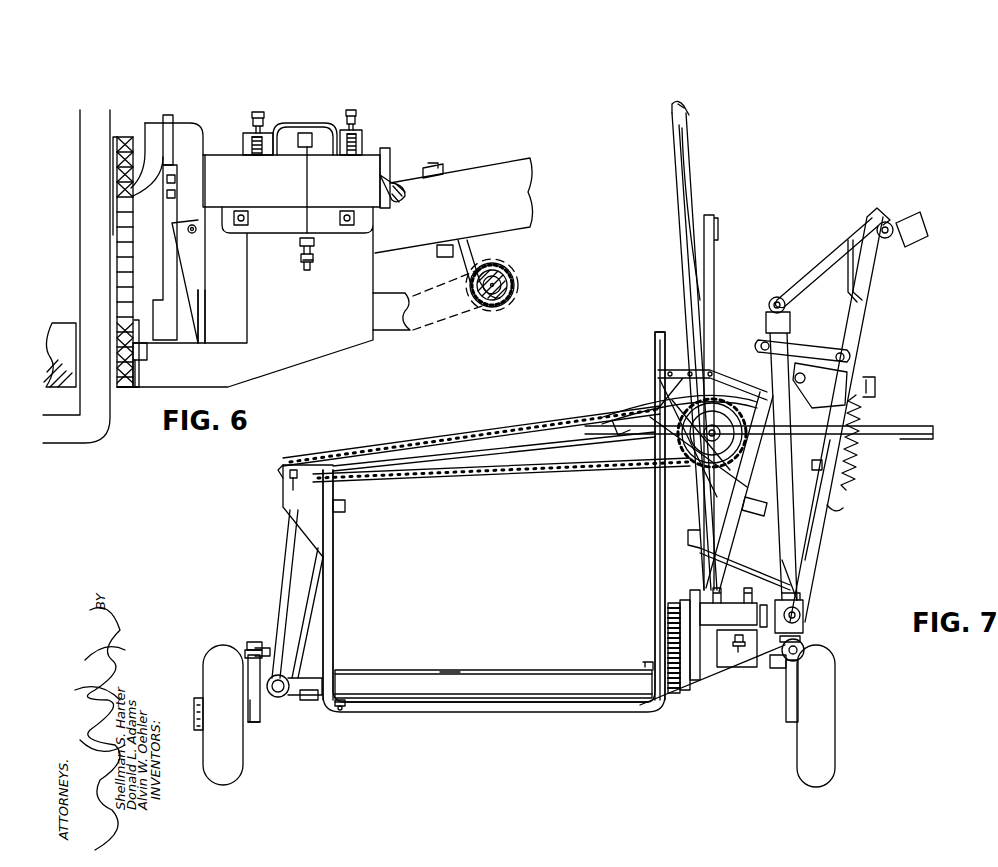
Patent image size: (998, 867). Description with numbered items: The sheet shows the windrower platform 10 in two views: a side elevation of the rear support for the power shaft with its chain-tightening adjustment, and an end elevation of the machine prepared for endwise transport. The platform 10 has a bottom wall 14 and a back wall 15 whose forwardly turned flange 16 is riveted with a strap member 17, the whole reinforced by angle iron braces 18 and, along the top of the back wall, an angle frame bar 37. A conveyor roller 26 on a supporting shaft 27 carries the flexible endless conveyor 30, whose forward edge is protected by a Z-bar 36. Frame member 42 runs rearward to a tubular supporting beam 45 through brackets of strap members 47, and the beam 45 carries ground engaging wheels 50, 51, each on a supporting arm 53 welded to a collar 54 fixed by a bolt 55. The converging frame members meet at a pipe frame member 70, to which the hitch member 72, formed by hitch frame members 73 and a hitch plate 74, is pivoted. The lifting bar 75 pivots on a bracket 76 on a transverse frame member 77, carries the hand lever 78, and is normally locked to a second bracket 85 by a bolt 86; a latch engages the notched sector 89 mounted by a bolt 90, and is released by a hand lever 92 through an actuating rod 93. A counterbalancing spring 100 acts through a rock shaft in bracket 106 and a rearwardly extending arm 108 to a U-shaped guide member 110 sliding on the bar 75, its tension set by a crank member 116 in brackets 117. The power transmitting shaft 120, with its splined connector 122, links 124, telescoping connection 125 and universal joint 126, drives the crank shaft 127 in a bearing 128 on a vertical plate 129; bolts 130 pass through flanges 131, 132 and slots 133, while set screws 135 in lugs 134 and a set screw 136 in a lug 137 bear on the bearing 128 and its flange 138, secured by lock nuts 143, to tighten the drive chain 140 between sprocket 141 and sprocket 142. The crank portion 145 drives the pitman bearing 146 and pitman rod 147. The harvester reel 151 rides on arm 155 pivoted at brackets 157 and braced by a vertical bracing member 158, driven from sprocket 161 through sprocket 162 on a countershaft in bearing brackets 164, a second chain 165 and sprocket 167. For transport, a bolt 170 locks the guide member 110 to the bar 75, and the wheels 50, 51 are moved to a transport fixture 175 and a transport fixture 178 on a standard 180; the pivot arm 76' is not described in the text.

In FIG. 7, the platform 10 is at (768, 490).
In FIG. 7, the bottom wall 14 is at (482, 704).
In FIG. 7, the back wall 15 is at (334, 585).
In FIG. 7, the flange 16 is at (342, 714).
In FIG. 7, the strap member 17 is at (342, 700).
In FIG. 6, the angle iron braces 18 is at (78, 438).
In FIG. 7, the angle iron braces 18 is at (553, 714).
In FIG. 6, the conveyor roller 26 is at (62, 335).
In FIG. 7, the conveyor roller 26 is at (530, 672).
In FIG. 6, the supporting shaft 27 is at (140, 352).
In FIG. 7, the supporting shaft 27 is at (312, 702).
In FIG. 7, the flexible endless conveyor 30 is at (448, 666).
In FIG. 7, the Z-bar 36 is at (650, 662).
In FIG. 7, the angle frame bar 37 is at (340, 508).
In FIG. 6, the frame member 42 is at (393, 334).
In FIG. 7, the frame member 42 is at (695, 690).
In FIG. 7, the tubular supporting beam 45 is at (254, 722).
In FIG. 7, the strap members 47 is at (285, 696).
In FIG. 7, the ground engaging wheel 50 is at (804, 770).
In FIG. 7, the ground engaging wheel 51 is at (218, 780).
In FIG. 7, the supporting arm 53 is at (248, 680).
In FIG. 7, the collar 54 is at (805, 650).
In FIG. 7, the bolt 55 is at (800, 640).
In FIG. 6, the pipe frame member 70 is at (512, 278).
In FIG. 7, the hitch member 72 is at (877, 339).
In FIG. 7, the hitch frame members 73 is at (820, 552).
In FIG. 7, the hitch plate 74 is at (850, 245).
In FIG. 6, the bar 75 is at (495, 168).
In FIG. 7, the bar 75 is at (738, 530).
In FIG. 6, the bracket 76 is at (216, 316).
In FIG. 7, the bracket 76 is at (737, 665).
In FIG. 6, the pivot arm 76' is at (203, 249).
In FIG. 6, the transverse frame member 77 is at (206, 326).
In FIG. 7, the hand lever 78 is at (676, 196).
In FIG. 6, the second bracket 85 is at (474, 262).
In FIG. 6, the bolt 86 is at (440, 256).
In FIG. 7, the notched sector 89 is at (614, 420).
In FIG. 7, the bolt 90 is at (817, 460).
In FIG. 7, the hand lever 92 is at (688, 126).
In FIG. 7, the actuating rod 93 is at (688, 160).
In FIG. 7, the counterbalancing spring 100 is at (850, 456).
In FIG. 7, the bracket 106 is at (825, 380).
In FIG. 7, the rearwardly extending arm 108 is at (833, 478).
In FIG. 7, the U-shaped guide member 110 is at (826, 508).
In FIG. 7, the crank member 116 is at (695, 550).
In FIG. 6, the brackets 117 is at (445, 168).
In FIG. 7, the brackets 117 is at (730, 540).
In FIG. 7, the power transmitting shaft 120 is at (763, 362).
In FIG. 7, the splined connector 122 is at (912, 222).
In FIG. 7, the links 124 is at (812, 350).
In FIG. 7, the telescoping connection 125 is at (794, 568).
In FIG. 7, the universal joint 126 is at (802, 615).
In FIG. 6, the crank shaft 127 is at (392, 172).
In FIG. 7, the crank shaft 127 is at (788, 640).
In FIG. 6, the bearing 128 is at (365, 155).
In FIG. 7, the bearing 128 is at (728, 606).
In FIG. 6, the vertical plate 129 is at (346, 293).
In FIG. 6, the bolts 130 is at (308, 210).
In FIG. 6, the flange 131 is at (330, 124).
In FIG. 6, the flange 132 is at (346, 228).
In FIG. 6, the slots 133 is at (320, 136).
In FIG. 6, the lugs 134 is at (244, 136).
In FIG. 6, the set screws 135 is at (258, 108).
In FIG. 6, the set screw 136 is at (302, 266).
In FIG. 6, the lug 137 is at (300, 244).
In FIG. 6, the flange 138 is at (258, 226).
In FIG. 6, the drive chain 140 is at (136, 322).
In FIG. 7, the drive chain 140 is at (667, 630).
In FIG. 6, the sprocket 141 is at (116, 162).
In FIG. 6, the sprocket 142 is at (136, 385).
In FIG. 6, the lock nuts 143 is at (262, 134).
In FIG. 6, the crank portion 145 is at (152, 130).
In FIG. 7, the crank portion 145 is at (690, 596).
In FIG. 6, the pitman bearing 146 is at (172, 120).
In FIG. 6, the pitman rod 147 is at (164, 232).
In FIG. 7, the pitman rod 147 is at (683, 605).
In FIG. 7, the harvester reel 151 is at (928, 426).
In FIG. 7, the arm 155 is at (458, 466).
In FIG. 7, the brackets 157 is at (333, 458).
In FIG. 7, the vertical bracing member 158 is at (656, 333).
In FIG. 7, the sprocket 161 is at (194, 700).
In FIG. 7, the sprocket 162 is at (283, 466).
In FIG. 7, the bearing brackets 164 is at (296, 500).
In FIG. 7, the second chain 165 is at (404, 440).
In FIG. 7, the sprocket 167 is at (656, 400).
In FIG. 7, the bolt 170 is at (708, 491).
In FIG. 7, the transport fixture 175 is at (784, 664).
In FIG. 7, the transport fixture 178 is at (260, 645).
In FIG. 7, the standard 180 is at (270, 653).